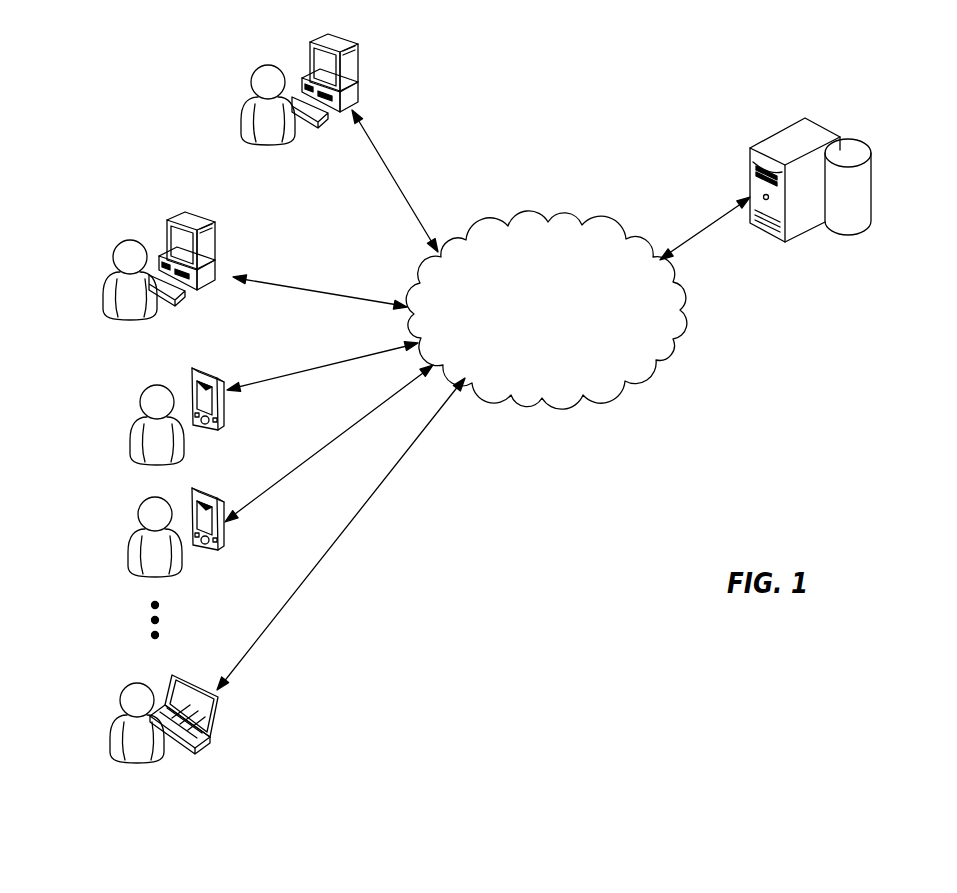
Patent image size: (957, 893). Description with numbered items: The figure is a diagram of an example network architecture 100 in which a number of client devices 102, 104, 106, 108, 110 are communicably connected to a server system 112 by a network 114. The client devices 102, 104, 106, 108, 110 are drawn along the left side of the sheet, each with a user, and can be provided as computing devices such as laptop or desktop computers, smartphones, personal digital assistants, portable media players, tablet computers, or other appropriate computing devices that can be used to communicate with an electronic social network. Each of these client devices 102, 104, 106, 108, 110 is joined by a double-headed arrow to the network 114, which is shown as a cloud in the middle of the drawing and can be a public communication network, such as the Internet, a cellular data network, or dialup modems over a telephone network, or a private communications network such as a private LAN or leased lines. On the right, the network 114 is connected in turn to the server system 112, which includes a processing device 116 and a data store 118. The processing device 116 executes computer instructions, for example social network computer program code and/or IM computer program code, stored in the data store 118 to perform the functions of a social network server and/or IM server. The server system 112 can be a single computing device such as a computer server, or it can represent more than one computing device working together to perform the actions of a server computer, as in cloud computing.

The network architecture 100 is at (642, 98).
The client device 102 is at (328, 40).
The client device 104 is at (184, 220).
The client device 106 is at (203, 368).
The client device 108 is at (209, 488).
The client device 110 is at (178, 675).
The server system 112 is at (821, 196).
The network 114 is at (560, 218).
The processing device 116 is at (818, 123).
The data store 118 is at (872, 187).